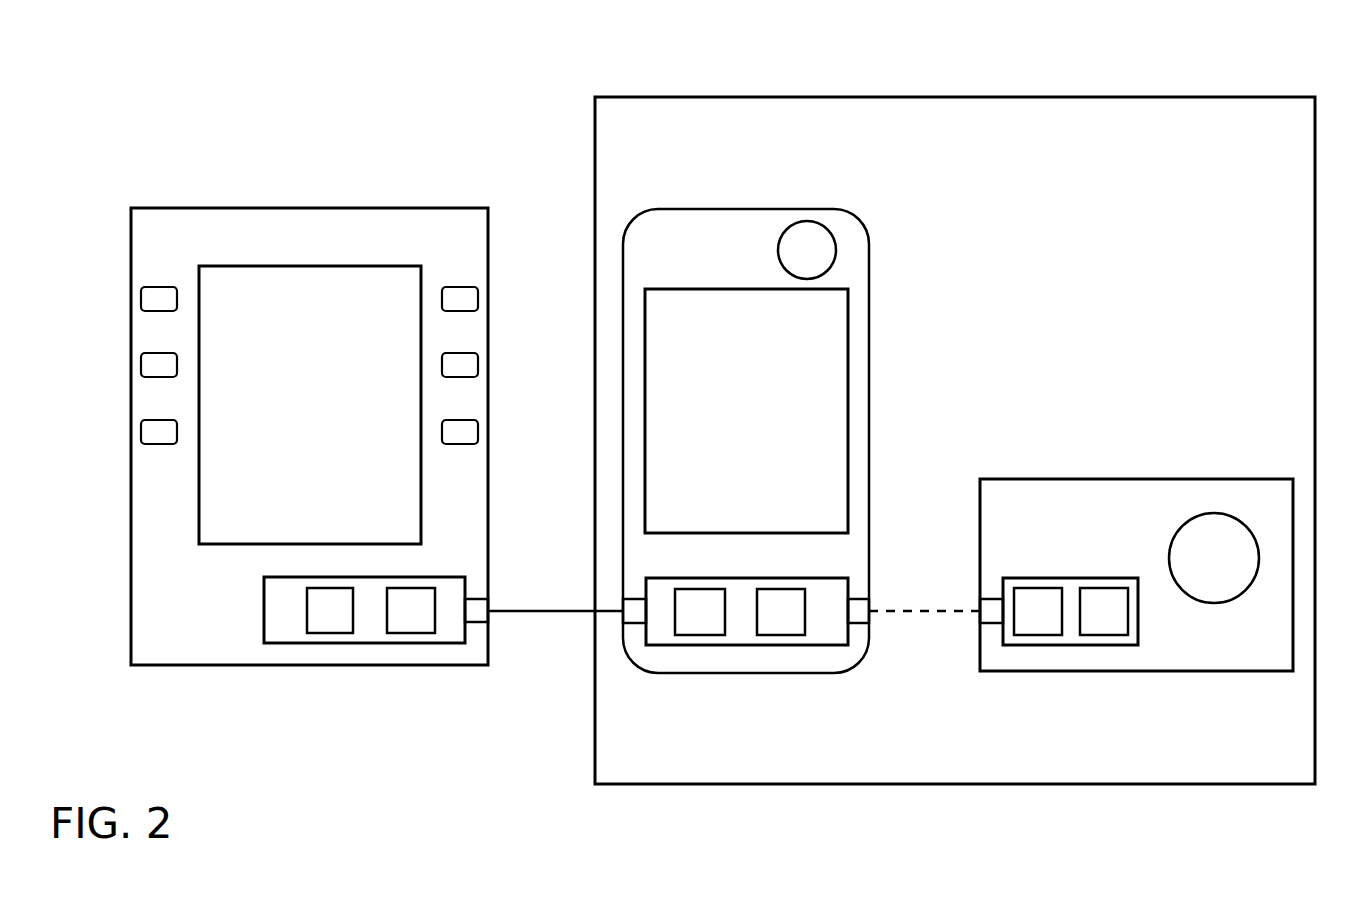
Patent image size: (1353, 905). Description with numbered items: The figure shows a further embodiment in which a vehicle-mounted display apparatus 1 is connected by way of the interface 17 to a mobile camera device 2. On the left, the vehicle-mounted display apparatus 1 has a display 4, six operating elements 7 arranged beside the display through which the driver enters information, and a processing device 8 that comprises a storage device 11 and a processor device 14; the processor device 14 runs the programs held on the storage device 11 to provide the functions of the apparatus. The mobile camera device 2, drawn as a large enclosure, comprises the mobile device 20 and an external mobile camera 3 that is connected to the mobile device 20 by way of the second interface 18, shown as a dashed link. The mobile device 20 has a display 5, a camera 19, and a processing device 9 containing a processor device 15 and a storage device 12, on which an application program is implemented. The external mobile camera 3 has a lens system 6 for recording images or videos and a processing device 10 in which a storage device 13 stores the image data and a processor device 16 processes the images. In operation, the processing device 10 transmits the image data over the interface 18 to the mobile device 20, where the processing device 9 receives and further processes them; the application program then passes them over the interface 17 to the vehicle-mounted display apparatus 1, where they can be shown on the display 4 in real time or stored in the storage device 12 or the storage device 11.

The vehicle-mounted display apparatus 1 is at (179, 207).
The mobile camera device 2 is at (677, 97).
The external mobile camera 3 is at (1008, 479).
The display 4 is at (355, 265).
The display 5 is at (695, 290).
The lens system 6 is at (1214, 515).
The operating elements 7 is at (152, 420).
The processing device 8 is at (439, 643).
The processing device 9 is at (659, 643).
The processing device 10 is at (1133, 644).
The storage device 11 is at (317, 633).
The storage device 12 is at (783, 634).
The storage device 13 is at (1097, 633).
The processor device 14 is at (396, 633).
The processor device 15 is at (703, 634).
The processor device 16 is at (1033, 633).
The interface 17 is at (636, 612).
The second interface 18 is at (992, 611).
The camera 19 is at (825, 228).
The mobile device 20 is at (779, 209).